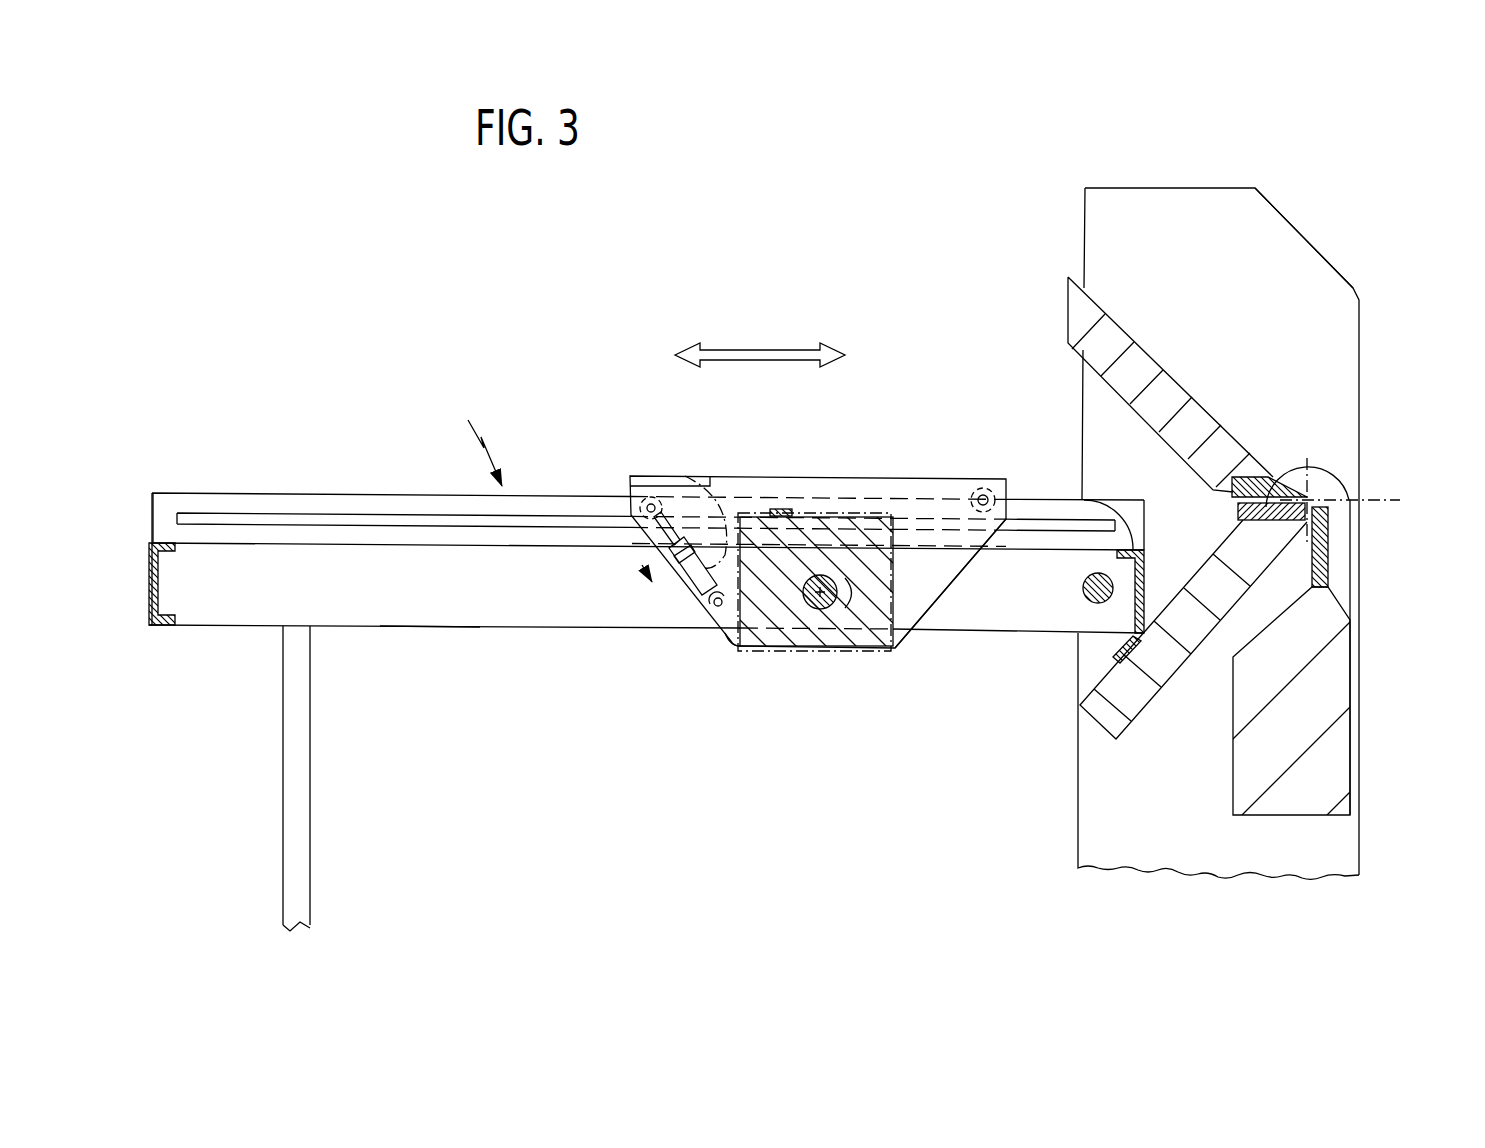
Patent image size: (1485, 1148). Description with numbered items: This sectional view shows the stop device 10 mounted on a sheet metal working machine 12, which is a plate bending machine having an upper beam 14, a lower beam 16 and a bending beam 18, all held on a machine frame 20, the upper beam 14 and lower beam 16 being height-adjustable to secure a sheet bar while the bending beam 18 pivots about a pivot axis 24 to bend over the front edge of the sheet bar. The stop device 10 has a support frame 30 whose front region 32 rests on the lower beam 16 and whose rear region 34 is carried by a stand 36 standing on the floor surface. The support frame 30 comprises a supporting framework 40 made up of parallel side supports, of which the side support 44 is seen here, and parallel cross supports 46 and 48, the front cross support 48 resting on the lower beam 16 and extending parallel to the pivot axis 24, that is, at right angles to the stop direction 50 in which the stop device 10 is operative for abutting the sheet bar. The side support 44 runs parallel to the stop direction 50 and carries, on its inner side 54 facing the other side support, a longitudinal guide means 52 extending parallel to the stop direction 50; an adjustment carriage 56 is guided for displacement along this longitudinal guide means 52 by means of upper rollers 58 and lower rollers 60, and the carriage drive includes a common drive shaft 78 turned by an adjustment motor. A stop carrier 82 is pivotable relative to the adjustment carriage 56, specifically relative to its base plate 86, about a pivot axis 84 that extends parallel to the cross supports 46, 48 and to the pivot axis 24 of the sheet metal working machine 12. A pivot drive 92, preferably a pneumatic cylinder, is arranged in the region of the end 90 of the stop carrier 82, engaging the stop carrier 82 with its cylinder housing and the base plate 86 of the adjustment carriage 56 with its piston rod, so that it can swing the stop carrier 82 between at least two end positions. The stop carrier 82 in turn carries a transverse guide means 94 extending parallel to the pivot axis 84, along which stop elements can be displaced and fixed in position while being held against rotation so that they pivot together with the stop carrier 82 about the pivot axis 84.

The stop device 10 is at (479, 436).
The sheet metal working machine 12 is at (1327, 237).
The upper beam 14 is at (1233, 448).
The lower beam 16 is at (1232, 593).
The bending beam 18 is at (1330, 551).
The machine frame 20 is at (1333, 311).
The pivot axis 24 is at (1300, 496).
The support frame 30 is at (542, 634).
The front region 32 is at (1115, 645).
The rear region 34 is at (218, 607).
The stand 36 is at (300, 916).
The supporting framework 40 is at (172, 629).
The side support 44 is at (427, 615).
The cross support 46 is at (162, 542).
The front cross support 48 is at (1130, 555).
The stop direction 50 is at (779, 351).
The longitudinal guide means 52 is at (347, 518).
The inner side 54 is at (447, 537).
The adjustment carriage 56 is at (893, 473).
The upper rollers 58 is at (640, 490).
The lower rollers 60 is at (855, 525).
The drive shaft 78 is at (1085, 600).
The stop carrier 82 is at (783, 640).
The pivot axis 84 is at (822, 606).
The base plate 86 is at (934, 598).
The end 90 is at (730, 633).
The pivot drive 92 is at (723, 552).
The transverse guide means 94 is at (780, 510).